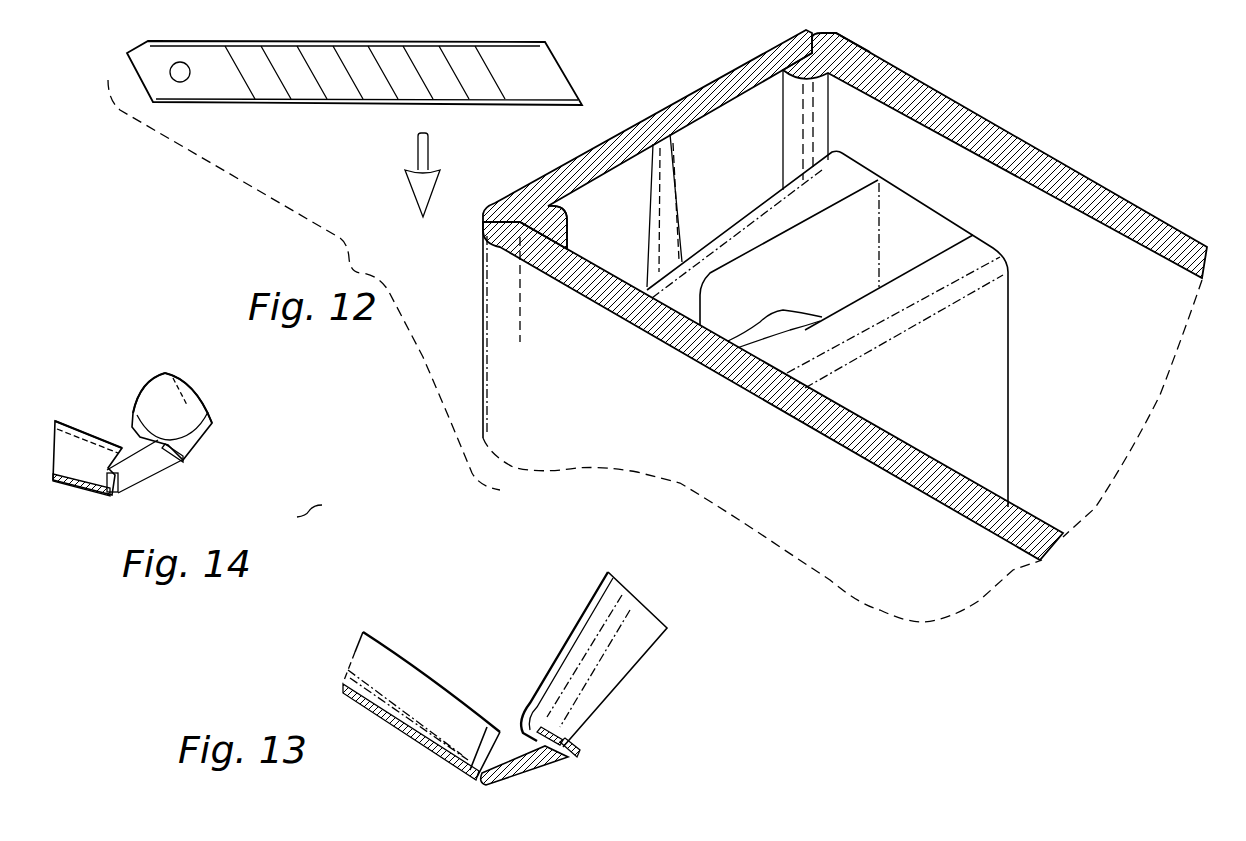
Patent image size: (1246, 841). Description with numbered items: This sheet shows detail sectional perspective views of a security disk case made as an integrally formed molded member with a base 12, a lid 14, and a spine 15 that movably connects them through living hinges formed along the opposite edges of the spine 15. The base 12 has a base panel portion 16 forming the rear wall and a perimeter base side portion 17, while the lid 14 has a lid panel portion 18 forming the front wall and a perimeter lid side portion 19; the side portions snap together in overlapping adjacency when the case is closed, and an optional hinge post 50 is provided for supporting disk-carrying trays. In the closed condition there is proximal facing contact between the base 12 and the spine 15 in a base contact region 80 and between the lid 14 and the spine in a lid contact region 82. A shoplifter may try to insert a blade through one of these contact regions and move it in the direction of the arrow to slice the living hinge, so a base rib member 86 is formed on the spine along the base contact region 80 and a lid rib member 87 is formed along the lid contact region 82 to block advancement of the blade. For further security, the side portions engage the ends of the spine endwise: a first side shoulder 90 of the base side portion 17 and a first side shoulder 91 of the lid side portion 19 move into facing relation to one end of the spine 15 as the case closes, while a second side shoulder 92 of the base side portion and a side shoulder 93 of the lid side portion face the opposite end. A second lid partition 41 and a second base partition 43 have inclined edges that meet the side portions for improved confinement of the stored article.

In FIG. 12, the base 12 is at (1070, 162).
In FIG. 14, the base 12 is at (93, 498).
In FIG. 13, the base 12 is at (583, 737).
In FIG. 12, the lid 14 is at (1018, 510).
In FIG. 14, the lid 14 is at (207, 435).
In FIG. 13, the lid 14 is at (443, 760).
In FIG. 14, the spine 15 is at (158, 473).
In FIG. 13, the spine 15 is at (523, 773).
In FIG. 12, the base panel portion 16 is at (1115, 318).
In FIG. 14, the base side portion 17 is at (110, 450).
In FIG. 13, the base side portion 17 is at (543, 667).
In FIG. 12, the lid panel portion 18 is at (831, 512).
In FIG. 14, the lid side portion 19 is at (146, 394).
In FIG. 13, the lid side portion 19 is at (473, 700).
In FIG. 14, the second lid partition 41 is at (172, 395).
In FIG. 14, the second base partition 43 is at (86, 464).
In FIG. 12, the hinge post 50 is at (953, 394).
In FIG. 12, the base contact region 80 is at (845, 40).
In FIG. 12, the lid contact region 82 is at (393, 104).
In FIG. 12, the base rib member 86 is at (795, 118).
In FIG. 12, the lid rib member 87 is at (570, 231).
In FIG. 13, the first side shoulder of the base side portion 90 is at (548, 765).
In FIG. 13, the first side shoulder of the lid side portion 91 is at (517, 727).
In FIG. 14, the second side shoulder of the base side portion 92 is at (143, 493).
In FIG. 14, the side shoulder of the lid side portion 93 is at (173, 472).